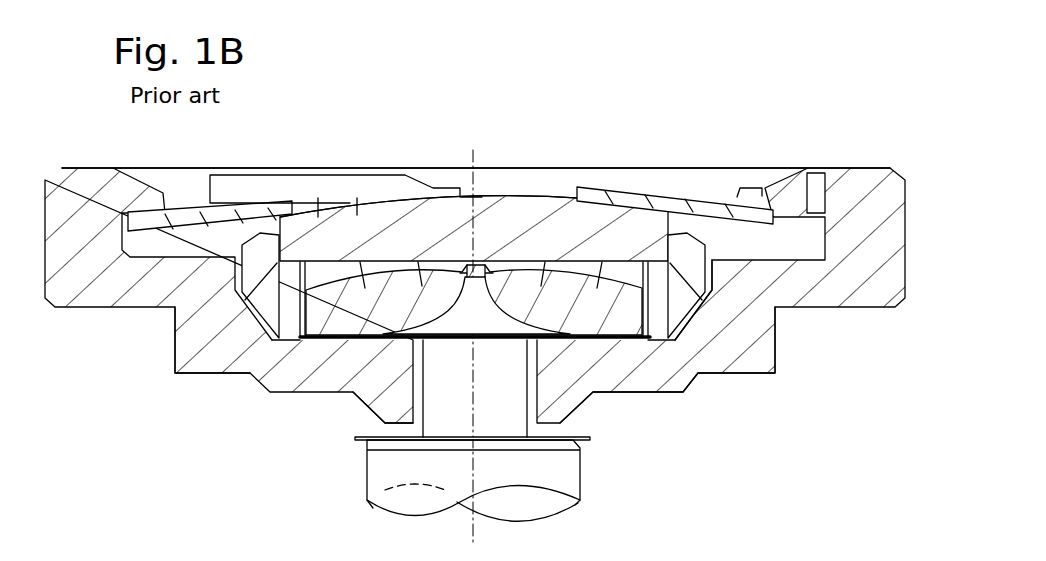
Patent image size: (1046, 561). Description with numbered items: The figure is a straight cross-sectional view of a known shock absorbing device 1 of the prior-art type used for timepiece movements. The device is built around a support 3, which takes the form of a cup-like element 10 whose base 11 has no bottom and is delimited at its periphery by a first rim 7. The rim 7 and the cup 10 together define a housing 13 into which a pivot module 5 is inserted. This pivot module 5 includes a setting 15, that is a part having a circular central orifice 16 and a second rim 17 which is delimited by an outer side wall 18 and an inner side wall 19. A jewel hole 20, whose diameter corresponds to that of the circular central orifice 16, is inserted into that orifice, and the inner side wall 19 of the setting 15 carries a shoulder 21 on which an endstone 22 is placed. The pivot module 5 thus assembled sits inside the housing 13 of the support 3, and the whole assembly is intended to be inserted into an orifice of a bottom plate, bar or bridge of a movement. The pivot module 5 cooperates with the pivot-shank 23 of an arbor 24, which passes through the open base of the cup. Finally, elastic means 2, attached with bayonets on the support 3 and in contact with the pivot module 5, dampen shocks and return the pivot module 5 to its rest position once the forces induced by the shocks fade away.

The shock absorbing device 1 is at (906, 101).
The elastic means 2 is at (689, 183).
The support 3 is at (814, 427).
The pivot module 5 is at (541, 184).
The first rim 7 is at (881, 237).
The cup-like element 10 is at (620, 362).
The base 11 is at (384, 419).
The housing 13 is at (718, 278).
The setting 15 is at (690, 362).
The circular central orifice 16 is at (647, 277).
The second rim 17 is at (178, 366).
The outer side wall 18 is at (166, 308).
The inner side wall 19 is at (262, 256).
The jewel hole 20 is at (325, 328).
The shoulder 21 is at (283, 310).
The endstone 22 is at (432, 220).
The pivot-shank 23 is at (457, 423).
The arbor 24 is at (382, 437).